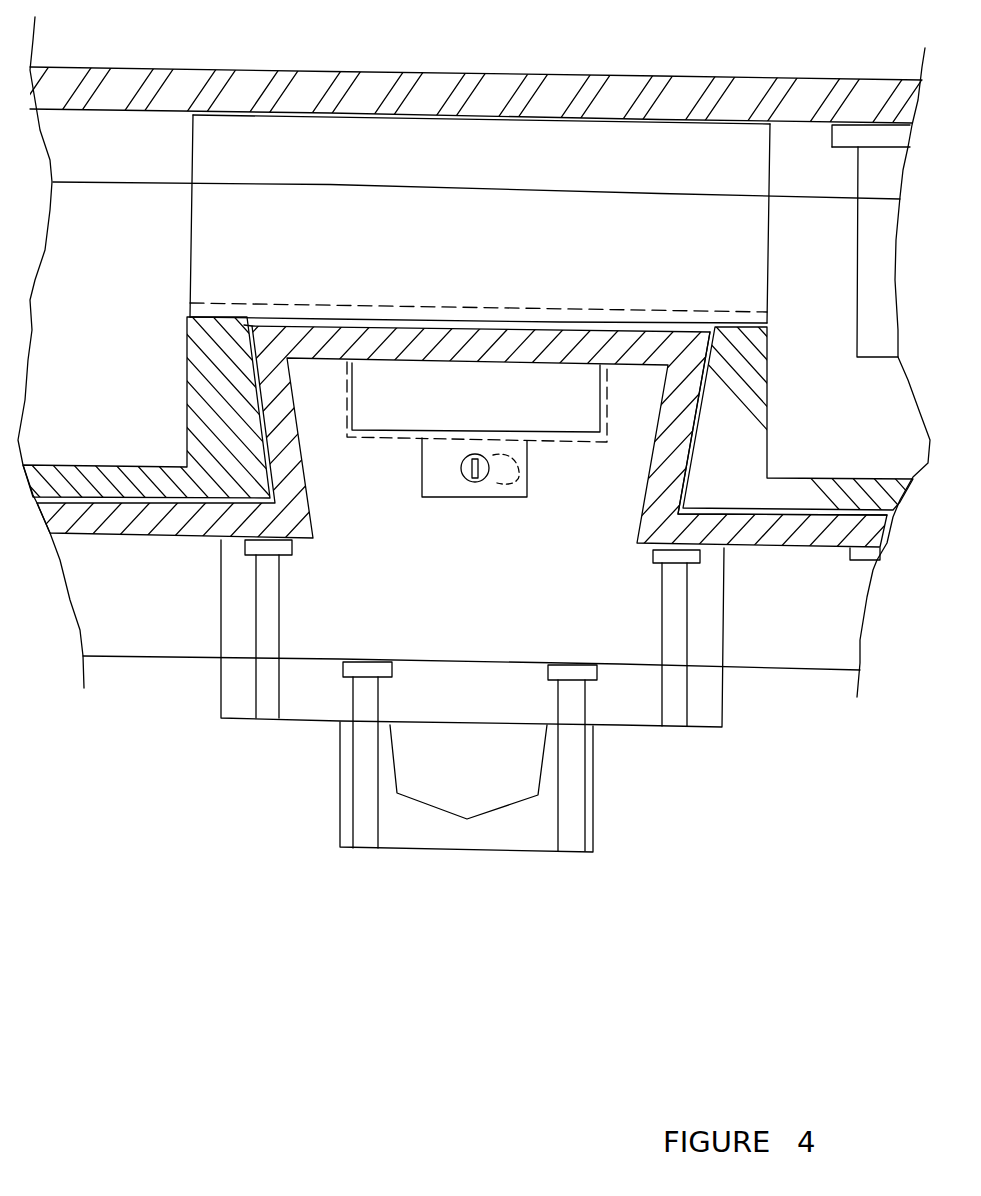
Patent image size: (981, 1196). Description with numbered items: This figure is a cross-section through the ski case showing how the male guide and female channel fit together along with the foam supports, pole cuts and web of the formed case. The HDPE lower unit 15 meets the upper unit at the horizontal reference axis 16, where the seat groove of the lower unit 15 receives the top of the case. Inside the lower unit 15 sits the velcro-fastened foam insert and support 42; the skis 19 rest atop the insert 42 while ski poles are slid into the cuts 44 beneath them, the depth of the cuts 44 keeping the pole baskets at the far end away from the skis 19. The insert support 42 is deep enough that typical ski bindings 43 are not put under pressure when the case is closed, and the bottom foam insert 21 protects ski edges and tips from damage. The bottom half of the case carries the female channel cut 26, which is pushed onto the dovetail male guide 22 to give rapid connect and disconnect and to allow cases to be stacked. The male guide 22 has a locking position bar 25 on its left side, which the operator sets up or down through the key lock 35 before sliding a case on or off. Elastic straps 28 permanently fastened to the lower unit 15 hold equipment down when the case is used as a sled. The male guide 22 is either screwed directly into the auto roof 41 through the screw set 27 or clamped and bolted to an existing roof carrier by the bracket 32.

The skis 19 is at (192, 80).
The foam insert and support 42 is at (233, 213).
The cuts 44 is at (743, 312).
The horizontal reference axis 16 is at (900, 198).
The ski bindings 43 is at (858, 318).
The female channel cut 26 is at (280, 434).
The bottom foam insert 21 is at (142, 482).
The lower unit 15 is at (863, 408).
The locking position bar 25 is at (485, 405).
The key lock 35 is at (487, 484).
The elastic straps 28 is at (873, 556).
The auto roof 41 is at (153, 657).
The screw set 27 is at (266, 650).
The male guide 22 is at (300, 700).
The bracket 32 is at (463, 850).